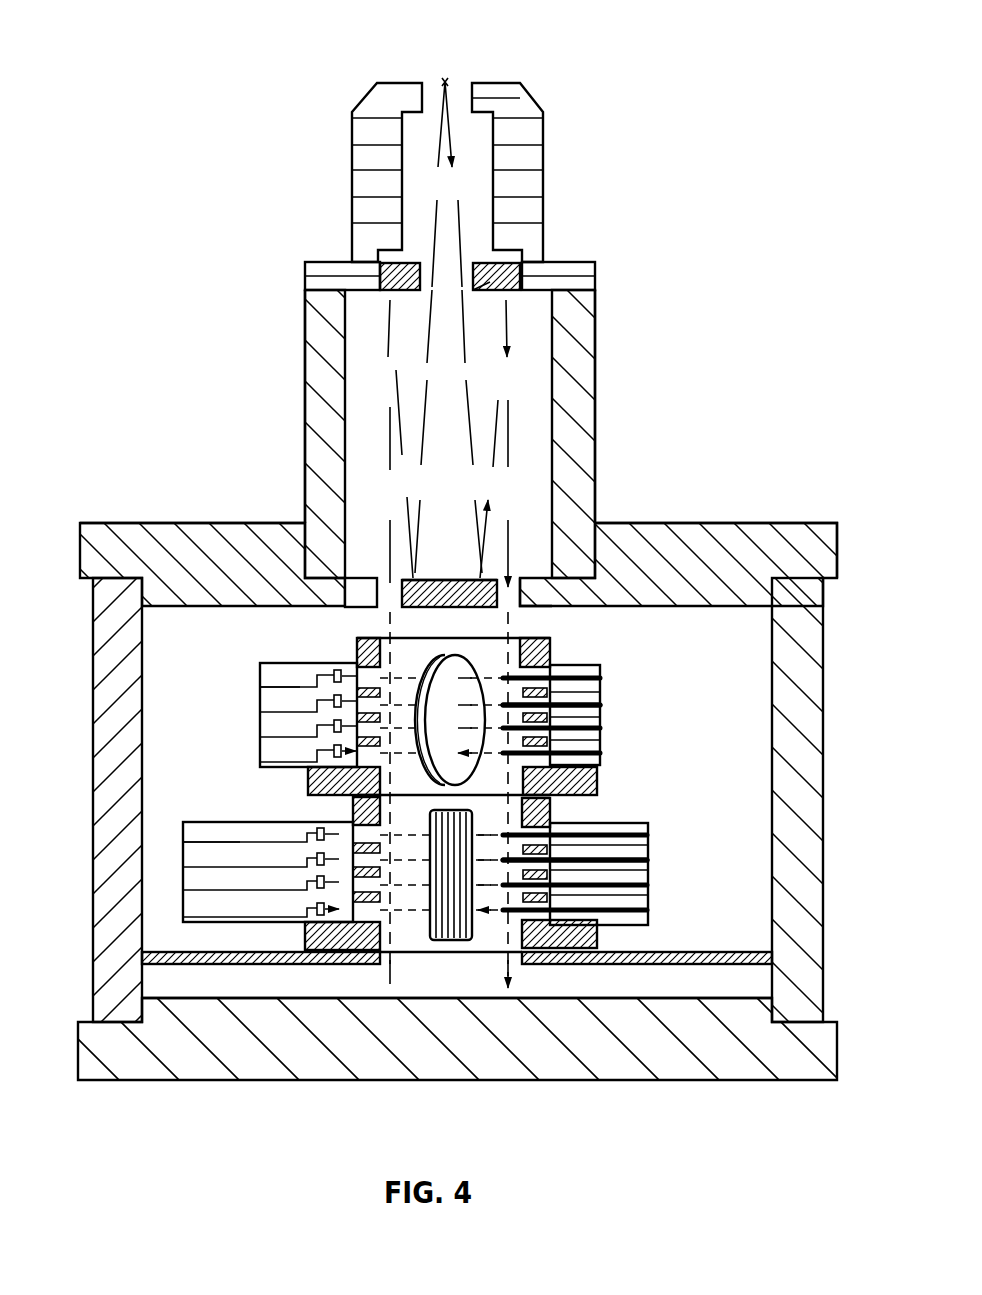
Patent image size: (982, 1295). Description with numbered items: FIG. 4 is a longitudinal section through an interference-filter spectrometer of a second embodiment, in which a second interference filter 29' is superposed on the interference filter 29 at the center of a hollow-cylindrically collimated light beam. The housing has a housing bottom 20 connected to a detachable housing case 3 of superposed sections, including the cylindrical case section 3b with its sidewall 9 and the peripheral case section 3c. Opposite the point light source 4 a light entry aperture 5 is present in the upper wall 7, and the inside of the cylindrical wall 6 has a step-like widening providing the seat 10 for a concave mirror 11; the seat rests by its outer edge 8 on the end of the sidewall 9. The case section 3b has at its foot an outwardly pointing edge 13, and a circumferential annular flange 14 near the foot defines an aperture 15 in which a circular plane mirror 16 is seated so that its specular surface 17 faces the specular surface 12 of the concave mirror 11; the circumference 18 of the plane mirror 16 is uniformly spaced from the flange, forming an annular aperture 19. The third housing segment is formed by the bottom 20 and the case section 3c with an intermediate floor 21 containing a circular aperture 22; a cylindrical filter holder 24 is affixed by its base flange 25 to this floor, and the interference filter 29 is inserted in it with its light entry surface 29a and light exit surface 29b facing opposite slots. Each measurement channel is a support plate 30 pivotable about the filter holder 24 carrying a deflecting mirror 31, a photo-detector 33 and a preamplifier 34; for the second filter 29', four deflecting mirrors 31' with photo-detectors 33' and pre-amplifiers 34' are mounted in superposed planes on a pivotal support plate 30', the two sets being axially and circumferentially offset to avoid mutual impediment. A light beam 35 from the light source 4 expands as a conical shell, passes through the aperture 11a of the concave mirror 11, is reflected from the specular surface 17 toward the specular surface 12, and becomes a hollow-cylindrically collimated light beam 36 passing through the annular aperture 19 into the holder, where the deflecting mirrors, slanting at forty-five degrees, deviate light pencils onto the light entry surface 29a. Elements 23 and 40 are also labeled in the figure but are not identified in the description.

The housing case 3 is at (827, 607).
The cylindrical case section 3b is at (300, 350).
The peripheral case section 3c is at (90, 905).
The point light source 4 is at (447, 80).
The light entry aperture 5 is at (421, 100).
The cylindrical wall 6 is at (532, 155).
The upper wall 7 is at (488, 100).
The outer edge 8 is at (583, 290).
The sidewall 9 is at (322, 405).
The seat 10 is at (385, 264).
The concave mirror 11 is at (516, 273).
The aperture 11a is at (468, 283).
The specular surface 12 is at (386, 292).
The edge 13 is at (777, 553).
The annular flange 14 is at (365, 598).
The aperture 15 is at (516, 598).
The plane mirror 16 is at (483, 578).
The specular surface 17 is at (453, 580).
The circumference 18 is at (367, 598).
The annular aperture 19 is at (643, 527).
The housing bottom 20 is at (660, 1040).
The intermediate floor 21 is at (714, 955).
The circular aperture 22 is at (521, 962).
The chamber 23 is at (748, 768).
The filter holder 24 is at (350, 810).
The base flange 25 is at (585, 940).
The interference filter 29 is at (441, 976).
The second interference filter 29' is at (452, 701).
The light entry surface 29a is at (477, 920).
The light exit surface 29b is at (430, 925).
The support plate 30 is at (611, 860).
The pivotal support plate 30' is at (598, 701).
The deflecting mirror 31 is at (613, 855).
The deflecting mirrors 31' is at (599, 686).
The photo-detector 33 is at (323, 1032).
The photo-detectors 33' is at (282, 701).
The preamplifier 34 is at (197, 992).
The pre-amplifiers 34' is at (243, 711).
The light beam 35 is at (460, 224).
The hollow-cylindrically collimated light beam 36 is at (517, 436).
The detector board 40 is at (180, 842).